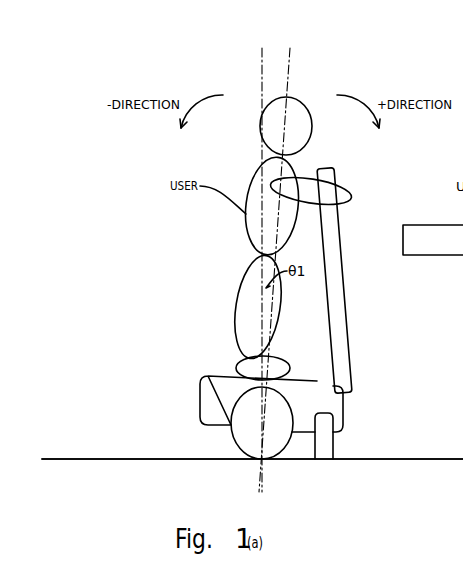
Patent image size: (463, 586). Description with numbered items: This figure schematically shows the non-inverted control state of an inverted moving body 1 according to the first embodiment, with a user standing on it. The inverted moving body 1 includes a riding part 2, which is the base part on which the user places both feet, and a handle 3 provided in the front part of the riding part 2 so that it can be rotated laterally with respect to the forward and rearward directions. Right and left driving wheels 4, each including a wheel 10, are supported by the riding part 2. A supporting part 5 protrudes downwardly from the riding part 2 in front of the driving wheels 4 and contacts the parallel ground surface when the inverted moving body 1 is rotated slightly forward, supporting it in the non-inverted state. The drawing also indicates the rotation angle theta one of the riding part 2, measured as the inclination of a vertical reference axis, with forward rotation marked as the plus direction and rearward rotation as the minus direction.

The inverted moving body 1 is at (281, 332).
The riding part 2 is at (200, 406).
The handle 3 is at (343, 298).
The driving wheels 4 is at (228, 458).
The supporting part 5 is at (334, 448).
The wheel 10 is at (284, 448).